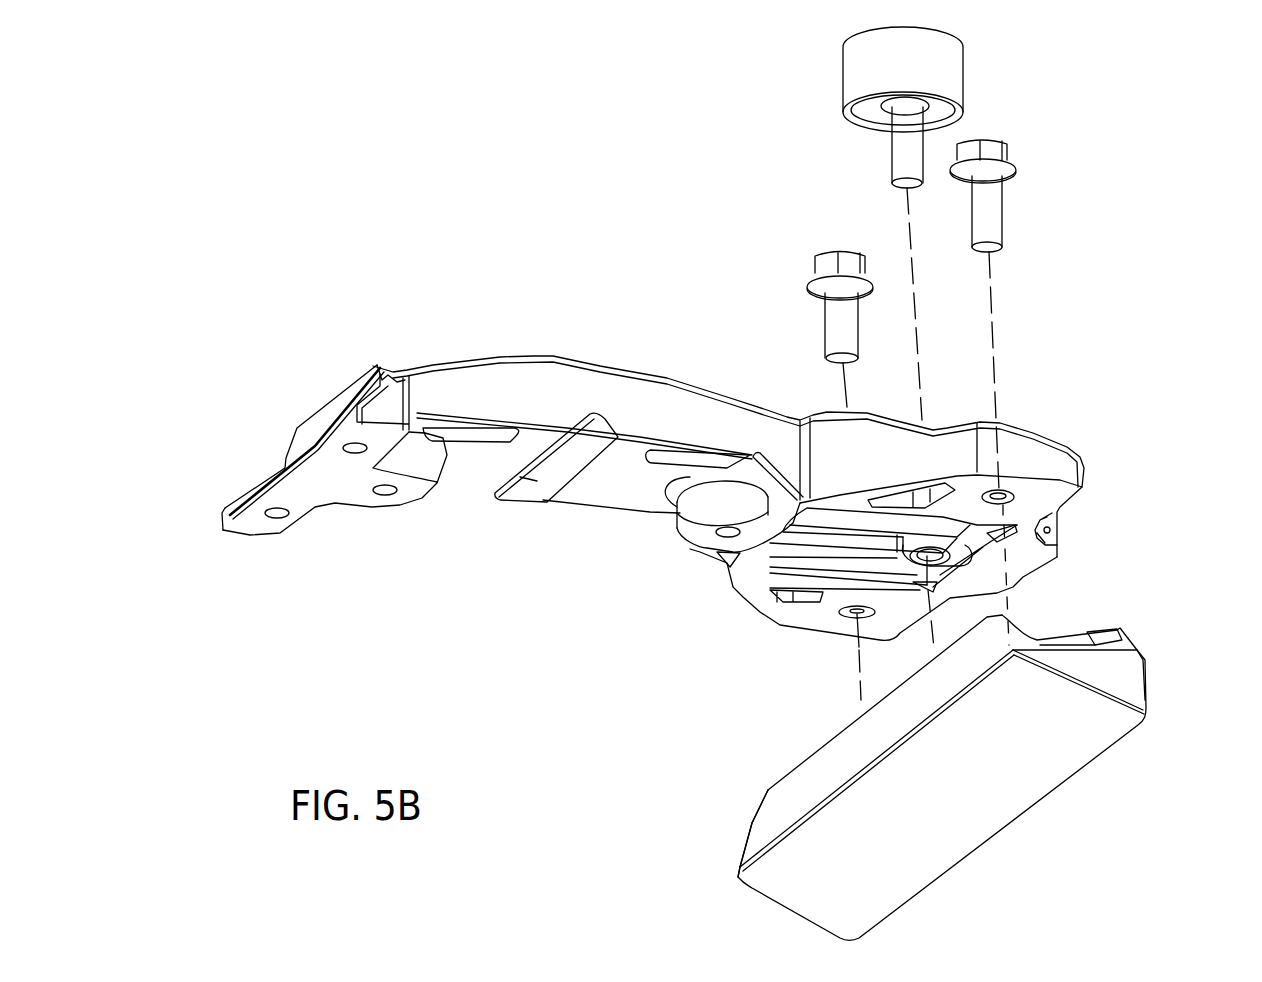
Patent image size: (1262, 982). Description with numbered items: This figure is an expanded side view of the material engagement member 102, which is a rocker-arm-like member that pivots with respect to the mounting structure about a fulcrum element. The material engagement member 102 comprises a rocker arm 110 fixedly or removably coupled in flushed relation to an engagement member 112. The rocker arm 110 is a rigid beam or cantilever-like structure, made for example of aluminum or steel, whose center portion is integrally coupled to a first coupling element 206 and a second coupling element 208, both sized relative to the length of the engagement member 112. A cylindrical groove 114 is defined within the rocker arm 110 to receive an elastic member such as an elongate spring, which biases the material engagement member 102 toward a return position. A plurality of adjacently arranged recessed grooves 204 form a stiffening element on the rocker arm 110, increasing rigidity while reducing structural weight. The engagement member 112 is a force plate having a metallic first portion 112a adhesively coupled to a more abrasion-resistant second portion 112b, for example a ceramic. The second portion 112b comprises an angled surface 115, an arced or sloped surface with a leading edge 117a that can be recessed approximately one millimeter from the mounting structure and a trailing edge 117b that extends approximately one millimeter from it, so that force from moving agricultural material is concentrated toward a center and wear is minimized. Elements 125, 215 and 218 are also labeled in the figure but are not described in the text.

The material engagement member 102 is at (485, 86).
The rocker arm 110 is at (383, 290).
The engagement member 112 is at (772, 717).
The first portion 112a is at (777, 803).
The second portion 112b is at (1103, 667).
The cylindrical groove 114 is at (418, 493).
The angled surface 115 is at (961, 803).
The leading edge 117a is at (740, 860).
The trailing edge 117b is at (1145, 683).
The fasteners 125 is at (943, 68).
The recessed grooves 204 is at (773, 565).
The first coupling element 206 is at (240, 527).
The second coupling element 208 is at (1023, 553).
The upper rim 215 is at (558, 378).
The support strap 218 is at (533, 480).